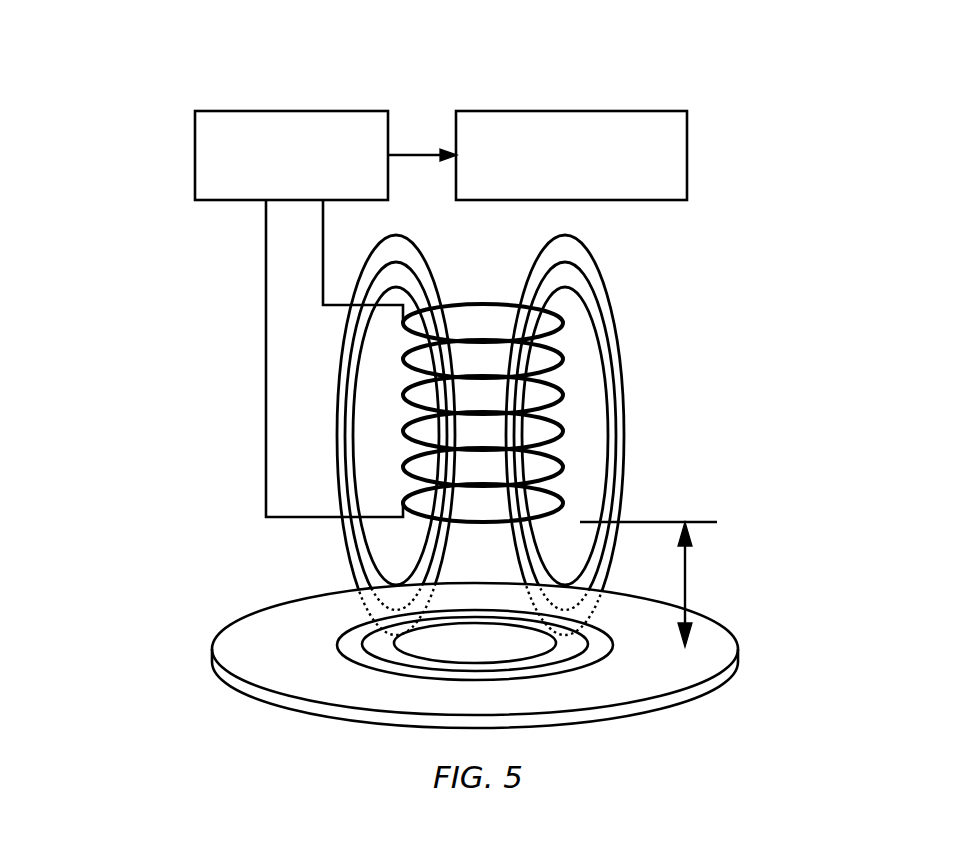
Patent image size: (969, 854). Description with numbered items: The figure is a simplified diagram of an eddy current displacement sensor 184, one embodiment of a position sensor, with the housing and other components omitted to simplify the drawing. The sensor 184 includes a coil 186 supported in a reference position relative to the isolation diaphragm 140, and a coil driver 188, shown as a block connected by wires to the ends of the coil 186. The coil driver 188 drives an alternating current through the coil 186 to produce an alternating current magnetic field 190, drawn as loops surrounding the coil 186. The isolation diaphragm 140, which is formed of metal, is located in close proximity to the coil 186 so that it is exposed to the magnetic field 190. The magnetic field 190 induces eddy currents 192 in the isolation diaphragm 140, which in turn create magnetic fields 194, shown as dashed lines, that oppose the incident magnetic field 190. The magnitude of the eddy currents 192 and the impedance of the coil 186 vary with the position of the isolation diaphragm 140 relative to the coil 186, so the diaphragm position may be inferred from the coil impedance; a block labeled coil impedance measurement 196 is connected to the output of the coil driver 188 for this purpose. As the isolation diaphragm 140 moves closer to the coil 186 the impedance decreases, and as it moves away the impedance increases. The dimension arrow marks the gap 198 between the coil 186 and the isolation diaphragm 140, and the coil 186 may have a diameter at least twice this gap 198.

The eddy current displacement sensor 184 is at (411, 384).
The coil driver 188 is at (206, 137).
The coil impedance measurement 196 is at (670, 118).
The coil 186 is at (490, 304).
The alternating current magnetic field 190 is at (339, 393).
The isolation diaphragm 140 is at (245, 632).
The eddy currents 192 is at (373, 667).
The magnetic fields 194 is at (427, 650).
The gap 198 is at (687, 586).